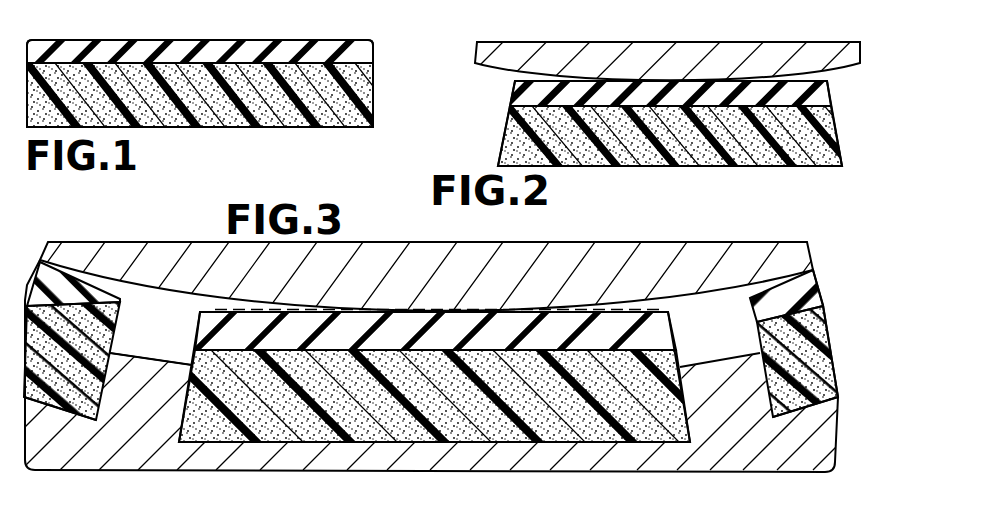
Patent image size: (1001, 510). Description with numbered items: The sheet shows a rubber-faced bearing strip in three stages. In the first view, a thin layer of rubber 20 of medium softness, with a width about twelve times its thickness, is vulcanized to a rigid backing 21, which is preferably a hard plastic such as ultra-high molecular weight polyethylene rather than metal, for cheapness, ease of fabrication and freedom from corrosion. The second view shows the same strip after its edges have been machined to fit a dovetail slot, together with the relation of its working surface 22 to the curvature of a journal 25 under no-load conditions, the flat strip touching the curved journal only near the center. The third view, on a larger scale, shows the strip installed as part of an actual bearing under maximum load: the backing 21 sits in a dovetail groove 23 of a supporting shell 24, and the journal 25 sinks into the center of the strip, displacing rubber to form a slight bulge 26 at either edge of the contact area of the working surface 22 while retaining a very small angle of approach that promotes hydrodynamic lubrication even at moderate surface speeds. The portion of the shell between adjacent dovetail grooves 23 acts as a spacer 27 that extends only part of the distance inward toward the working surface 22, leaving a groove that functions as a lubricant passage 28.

In FIG. 1, the layer of rubber 20 is at (135, 42).
In FIG. 2, the layer of rubber 20 is at (825, 91).
In FIG. 3, the layer of rubber 20 is at (658, 336).
In FIG. 1, the rigid backing 21 is at (204, 120).
In FIG. 2, the rigid backing 21 is at (690, 160).
In FIG. 3, the rigid backing 21 is at (444, 430).
In FIG. 1, the working surface 22 is at (253, 40).
In FIG. 2, the working surface 22 is at (560, 80).
In FIG. 3, the working surface 22 is at (652, 311).
In FIG. 3, the dovetail groove 23 is at (670, 392).
In FIG. 3, the supporting shell 24 is at (757, 462).
In FIG. 2, the journal 25 is at (655, 53).
In FIG. 3, the journal 25 is at (586, 256).
In FIG. 3, the bulge 26 is at (230, 306).
In FIG. 3, the spacer 27 is at (158, 424).
In FIG. 3, the lubricant passage 28 is at (128, 340).